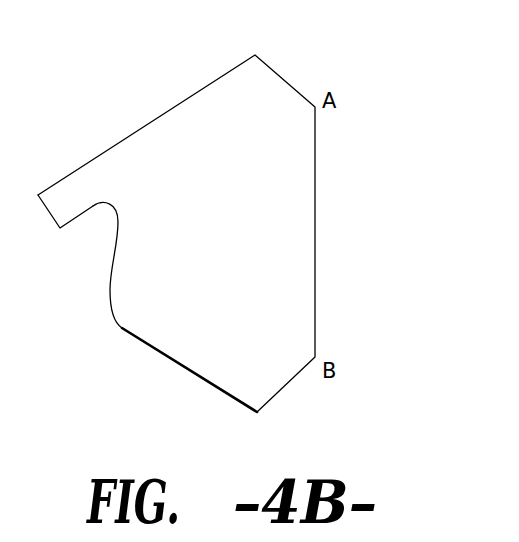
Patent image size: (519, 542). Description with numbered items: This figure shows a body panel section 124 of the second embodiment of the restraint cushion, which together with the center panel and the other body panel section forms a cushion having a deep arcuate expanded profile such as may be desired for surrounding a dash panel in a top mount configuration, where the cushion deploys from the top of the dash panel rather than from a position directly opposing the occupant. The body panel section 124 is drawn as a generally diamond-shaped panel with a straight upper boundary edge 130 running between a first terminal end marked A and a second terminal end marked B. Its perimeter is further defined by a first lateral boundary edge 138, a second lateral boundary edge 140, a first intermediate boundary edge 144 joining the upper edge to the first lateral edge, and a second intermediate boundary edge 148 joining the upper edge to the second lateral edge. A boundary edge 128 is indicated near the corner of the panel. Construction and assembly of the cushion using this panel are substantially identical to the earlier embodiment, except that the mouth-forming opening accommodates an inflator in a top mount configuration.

The body panel section 124 is at (245, 250).
The notch / corner portion 128 is at (46, 223).
The upper edge portion 138 is at (244, 39).
The upper right edge portion 144 is at (278, 30).
The side edge portion 130 is at (345, 107).
The lower edge portion 140 is at (247, 427).
The lower right edge portion 148 is at (338, 383).